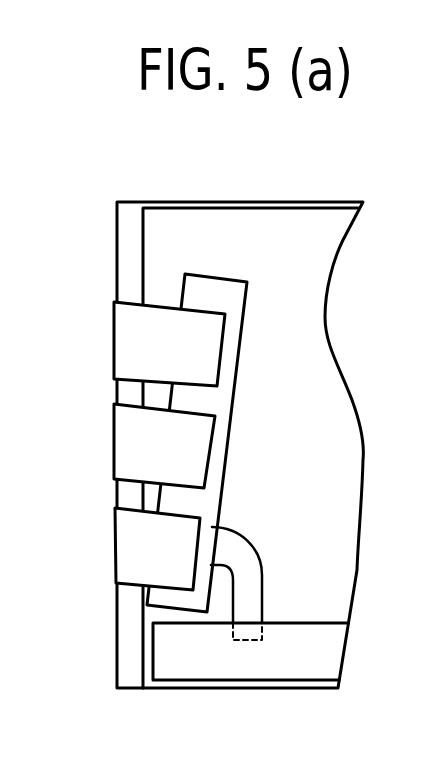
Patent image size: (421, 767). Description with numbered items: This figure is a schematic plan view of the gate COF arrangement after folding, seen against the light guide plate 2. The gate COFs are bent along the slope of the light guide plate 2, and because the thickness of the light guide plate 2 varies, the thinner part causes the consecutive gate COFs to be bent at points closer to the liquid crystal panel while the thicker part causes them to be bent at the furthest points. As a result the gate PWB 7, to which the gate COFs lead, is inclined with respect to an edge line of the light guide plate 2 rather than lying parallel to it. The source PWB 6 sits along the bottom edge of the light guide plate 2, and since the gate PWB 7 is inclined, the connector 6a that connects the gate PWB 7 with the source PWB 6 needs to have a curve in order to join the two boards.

The light guide plate 2 is at (252, 237).
The gate PWB 7 is at (200, 297).
The connector 6a is at (243, 570).
The source PWB 6 is at (250, 660).